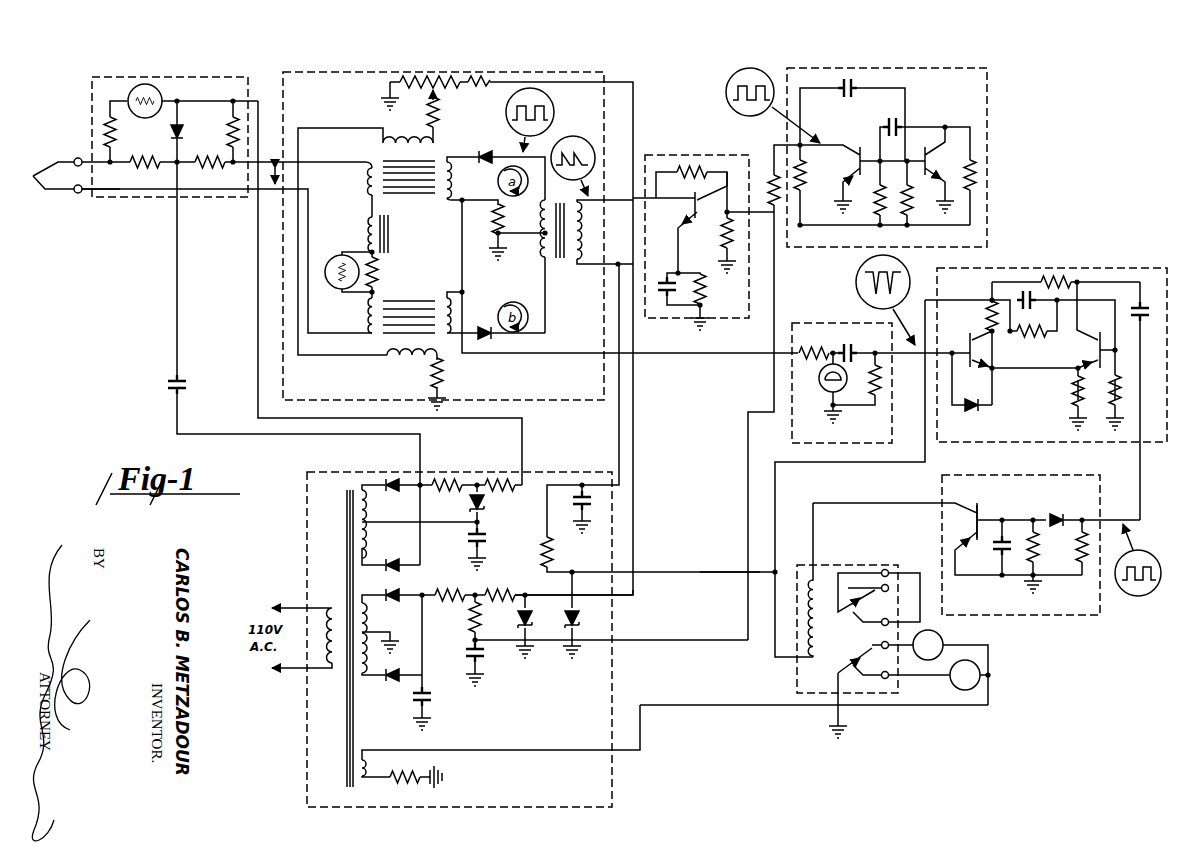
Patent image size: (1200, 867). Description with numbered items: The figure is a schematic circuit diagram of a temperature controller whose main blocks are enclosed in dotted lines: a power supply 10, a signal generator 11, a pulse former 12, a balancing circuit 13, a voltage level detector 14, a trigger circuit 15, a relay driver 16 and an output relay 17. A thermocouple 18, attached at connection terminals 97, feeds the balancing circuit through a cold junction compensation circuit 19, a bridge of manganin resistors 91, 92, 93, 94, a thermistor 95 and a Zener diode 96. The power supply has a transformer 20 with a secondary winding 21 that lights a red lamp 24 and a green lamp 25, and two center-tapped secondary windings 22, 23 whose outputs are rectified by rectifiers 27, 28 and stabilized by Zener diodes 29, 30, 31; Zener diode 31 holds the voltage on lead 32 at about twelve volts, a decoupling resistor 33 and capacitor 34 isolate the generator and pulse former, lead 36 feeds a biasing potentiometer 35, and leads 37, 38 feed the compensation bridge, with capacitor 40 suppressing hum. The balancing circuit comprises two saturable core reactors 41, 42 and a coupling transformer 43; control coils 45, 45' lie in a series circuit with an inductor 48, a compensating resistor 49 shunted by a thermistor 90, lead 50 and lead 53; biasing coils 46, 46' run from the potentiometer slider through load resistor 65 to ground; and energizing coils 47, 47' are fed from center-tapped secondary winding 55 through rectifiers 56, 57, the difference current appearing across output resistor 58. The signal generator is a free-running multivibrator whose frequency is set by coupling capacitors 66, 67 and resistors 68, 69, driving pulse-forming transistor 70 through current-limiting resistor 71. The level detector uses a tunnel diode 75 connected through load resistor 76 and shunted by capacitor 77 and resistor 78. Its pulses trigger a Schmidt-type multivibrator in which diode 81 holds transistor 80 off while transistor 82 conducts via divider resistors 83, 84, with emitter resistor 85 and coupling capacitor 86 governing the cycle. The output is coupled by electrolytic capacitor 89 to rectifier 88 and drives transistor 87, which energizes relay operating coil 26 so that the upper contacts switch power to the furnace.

The power supply 10 is at (614, 472).
The signal generator 11 is at (985, 68).
The pulse former 12 is at (751, 158).
The balancing circuit 13 is at (502, 70).
The voltage level detector 14 is at (789, 381).
The trigger circuit 15 is at (1166, 272).
The relay driver 16 is at (1109, 488).
The output relay 17 is at (906, 568).
The thermocouple 18 is at (53, 189).
The cold junction compensation circuit 19 is at (250, 80).
The transformer 20 is at (356, 518).
The secondary winding 21 is at (378, 767).
The center-tapped secondary winding 22 is at (360, 678).
The center-tapped secondary winding 23 is at (362, 553).
The red lamp 24 is at (952, 685).
The green lamp 25 is at (942, 638).
The relay operating coil 26 is at (816, 592).
The rectifier 27 is at (395, 491).
The rectifier 28 is at (388, 590).
The Zener diode 29 is at (489, 506).
The Zener diode 30 is at (517, 623).
The Zener diode 31 is at (567, 617).
The lead 32 is at (731, 576).
The decoupling resistor 33 is at (713, 290).
The capacitor 34 is at (665, 304).
The biasing potentiometer 35 is at (443, 90).
The lead 36 is at (635, 597).
The lead 37 is at (181, 300).
The lead 38 is at (257, 290).
The capacitor 40 is at (489, 540).
The saturable core reactor 41 is at (397, 193).
The saturable core reactor 42 is at (410, 298).
The coupling transformer 43 is at (555, 266).
The control coil 45 is at (353, 192).
The control coil 45' is at (352, 315).
The biasing coil 46 is at (365, 231).
The biasing coil 46' is at (416, 379).
The energizing coil 47 is at (464, 178).
The energizing coil 47' is at (473, 307).
The inductor 48 is at (370, 232).
The compensating resistor 49 is at (380, 270).
The lead 50 is at (270, 163).
The lead 53 is at (154, 195).
The center-tapped secondary winding 55 is at (542, 250).
The rectifier 56 is at (485, 151).
The rectifier 57 is at (486, 328).
The output resistor 58 is at (492, 224).
The load resistor 65 is at (438, 120).
The coupling capacitor 66 is at (841, 99).
The coupling capacitor 67 is at (891, 117).
The resistor 68 is at (912, 214).
The resistor 69 is at (876, 212).
The pulse-forming transistor 70 is at (688, 228).
The current-limiting resistor 71 is at (774, 206).
The tunnel diode 75 is at (820, 392).
The load resistor 76 is at (808, 345).
The capacitor 77 is at (850, 342).
The resistor 78 is at (872, 388).
The transistor 80 is at (971, 336).
The diode 81 is at (968, 412).
The transistor 82 is at (1097, 350).
The resistor 83 is at (1045, 340).
The resistor 84 is at (1122, 392).
The emitter resistor 85 is at (1072, 391).
The coupling capacitor 86 is at (1018, 296).
The transistor 87 is at (984, 512).
The rectifier 88 is at (1058, 512).
The electrolytic capacitor 89 is at (1134, 308).
The thermistor 90 is at (338, 258).
The compensating resistor 91 is at (140, 168).
The compensating resistor 92 is at (217, 168).
The manganin resistor 93 is at (104, 130).
The manganin resistor 94 is at (228, 134).
The thermistor 95 is at (128, 93).
The Zener diode 96 is at (170, 134).
The thermocouple connection terminals 97 is at (75, 158).